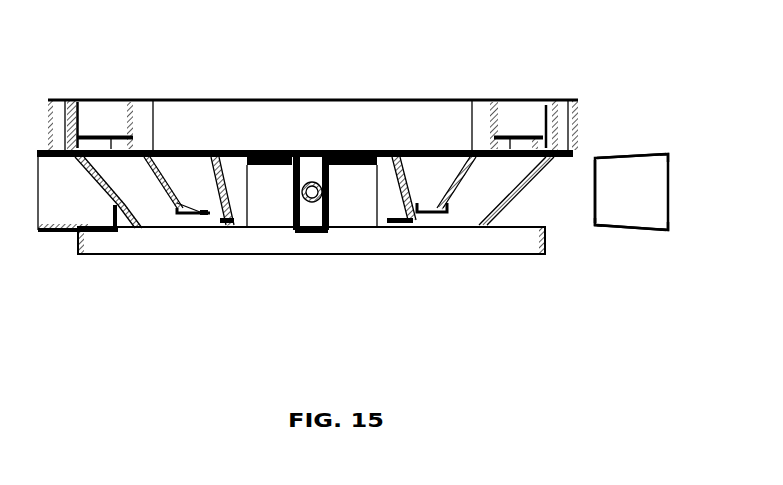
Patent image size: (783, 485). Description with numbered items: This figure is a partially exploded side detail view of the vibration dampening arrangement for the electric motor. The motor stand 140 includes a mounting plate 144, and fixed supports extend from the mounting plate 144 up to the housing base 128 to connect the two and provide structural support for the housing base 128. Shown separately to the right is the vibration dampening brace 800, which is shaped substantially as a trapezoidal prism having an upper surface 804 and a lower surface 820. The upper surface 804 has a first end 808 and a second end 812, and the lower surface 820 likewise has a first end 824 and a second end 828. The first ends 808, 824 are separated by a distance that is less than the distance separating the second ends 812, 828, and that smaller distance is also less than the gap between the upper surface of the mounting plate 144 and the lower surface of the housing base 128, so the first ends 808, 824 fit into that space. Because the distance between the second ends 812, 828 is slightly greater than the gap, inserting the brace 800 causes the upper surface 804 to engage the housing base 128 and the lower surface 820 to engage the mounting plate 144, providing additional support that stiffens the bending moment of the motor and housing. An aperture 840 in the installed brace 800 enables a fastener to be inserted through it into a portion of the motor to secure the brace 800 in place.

The housing base 128 is at (372, 115).
The motor stand 140 is at (244, 283).
The mounting plate 144 is at (457, 245).
The vibration dampening brace 800 is at (337, 237).
The upper surface 804 is at (632, 150).
The first end 808 is at (595, 157).
The second end 812 is at (668, 154).
The lower surface 820 is at (630, 234).
The first end 824 is at (595, 225).
The second end 828 is at (668, 230).
The aperture 840 is at (311, 192).